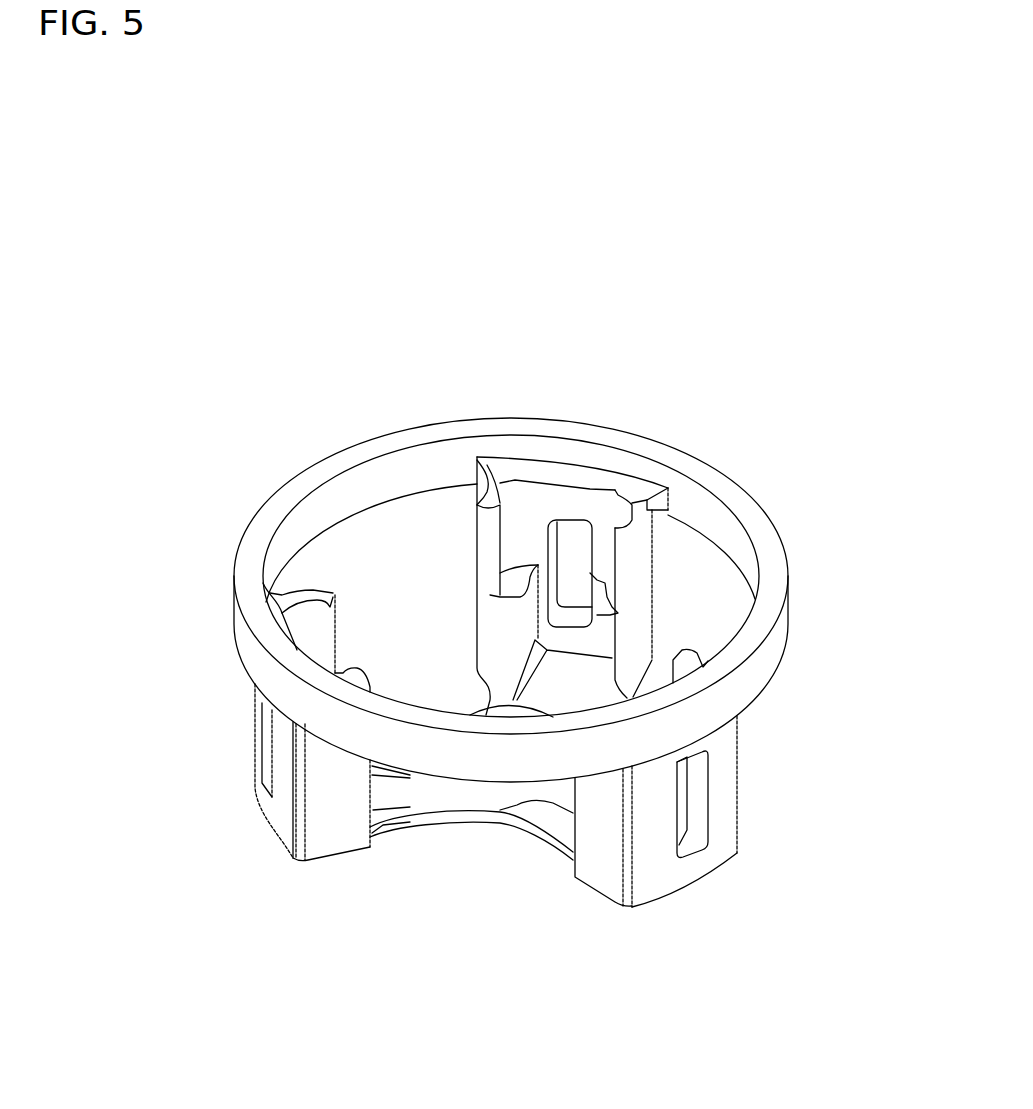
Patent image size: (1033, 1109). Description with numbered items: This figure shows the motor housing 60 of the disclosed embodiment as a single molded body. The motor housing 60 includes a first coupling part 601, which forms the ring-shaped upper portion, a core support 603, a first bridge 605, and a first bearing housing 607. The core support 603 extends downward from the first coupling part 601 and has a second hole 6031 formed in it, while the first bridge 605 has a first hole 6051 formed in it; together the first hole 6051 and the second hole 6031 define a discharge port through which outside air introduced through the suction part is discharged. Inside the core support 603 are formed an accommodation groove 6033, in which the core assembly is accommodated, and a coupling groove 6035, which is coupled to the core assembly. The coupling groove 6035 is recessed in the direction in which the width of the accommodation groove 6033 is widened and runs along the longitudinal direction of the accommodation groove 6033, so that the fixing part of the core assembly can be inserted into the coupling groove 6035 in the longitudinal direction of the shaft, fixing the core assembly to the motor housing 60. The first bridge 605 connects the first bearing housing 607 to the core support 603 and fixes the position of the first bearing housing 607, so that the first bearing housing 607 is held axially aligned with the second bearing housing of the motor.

The motor housing 60 is at (523, 645).
The first coupling part 601 is at (348, 497).
The core support 603 is at (272, 812).
The second hole 6031 is at (693, 793).
The accommodation groove 6033 is at (543, 557).
The coupling groove 6035 is at (523, 518).
The first bridge 605 is at (430, 818).
The first hole 6051 is at (378, 792).
The first bearing housing 607 is at (527, 820).